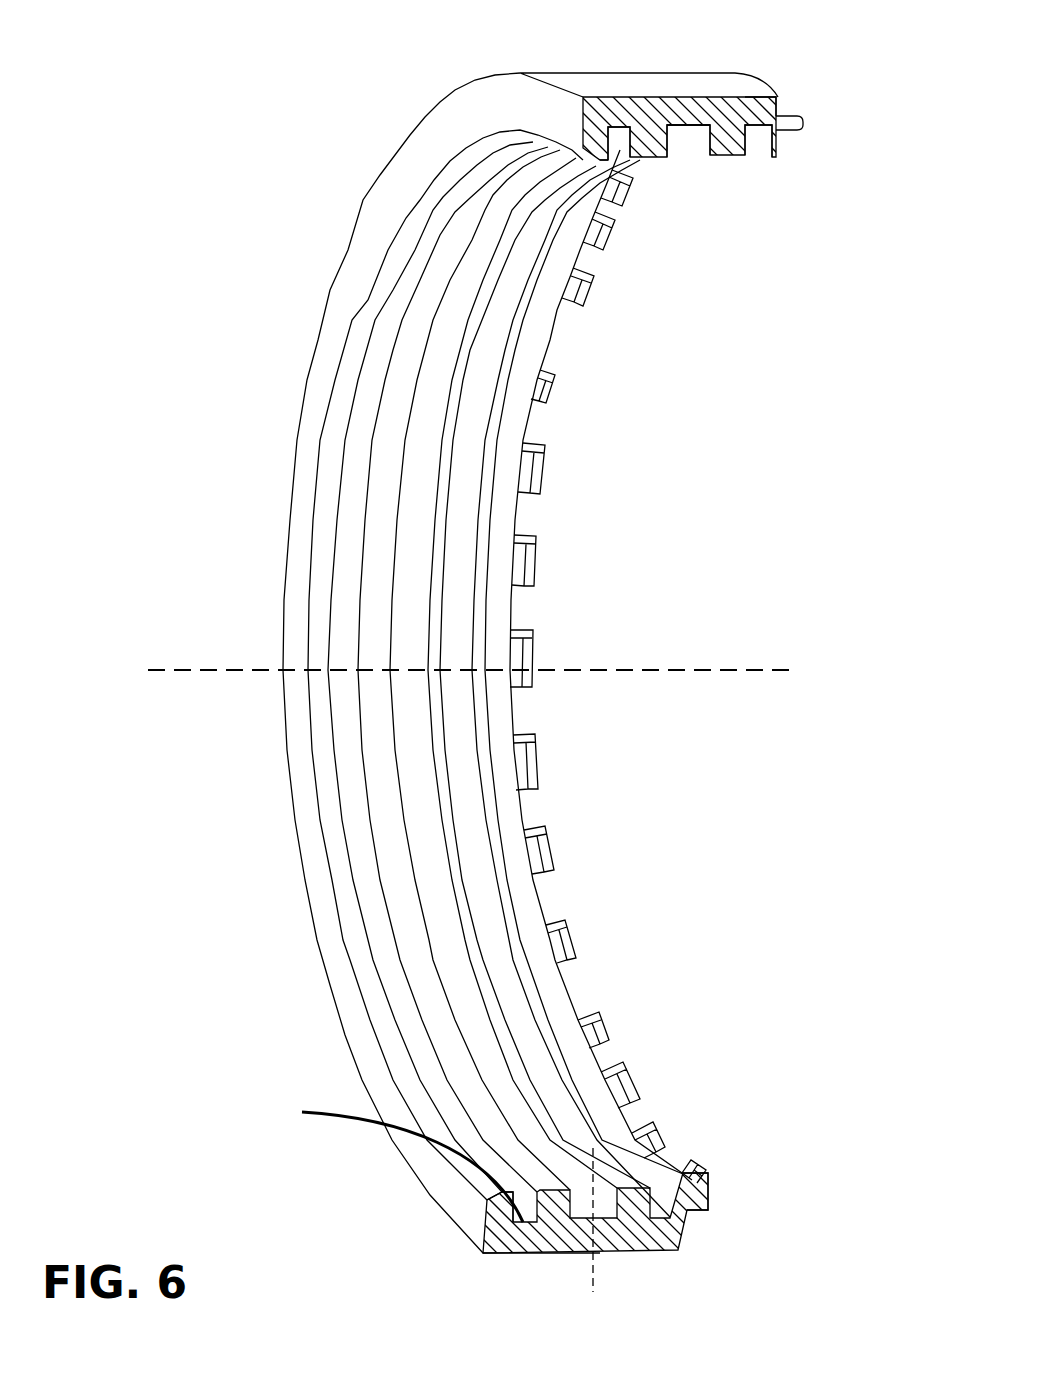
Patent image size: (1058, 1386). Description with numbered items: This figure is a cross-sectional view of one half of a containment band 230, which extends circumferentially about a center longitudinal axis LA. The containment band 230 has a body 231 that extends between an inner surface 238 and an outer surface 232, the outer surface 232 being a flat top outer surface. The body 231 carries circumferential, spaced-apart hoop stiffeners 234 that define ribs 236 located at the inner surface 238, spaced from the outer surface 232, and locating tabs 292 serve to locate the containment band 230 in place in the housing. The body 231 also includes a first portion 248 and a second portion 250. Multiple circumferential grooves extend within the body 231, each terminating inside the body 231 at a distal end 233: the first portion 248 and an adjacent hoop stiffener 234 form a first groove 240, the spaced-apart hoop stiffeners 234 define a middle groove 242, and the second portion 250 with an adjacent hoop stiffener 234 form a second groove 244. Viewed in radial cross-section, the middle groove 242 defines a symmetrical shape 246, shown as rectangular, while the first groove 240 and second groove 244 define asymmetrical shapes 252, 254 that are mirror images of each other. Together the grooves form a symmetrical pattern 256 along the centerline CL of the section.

The containment band 230 is at (247, 55).
The body 231 is at (776, 118).
The outer surface 232 is at (595, 83).
The distal end 233 is at (390, 1161).
The hoop stiffeners 234 is at (448, 578).
The ribs 236 is at (676, 1250).
The inner surface 238 is at (642, 1163).
The first groove 240 is at (619, 154).
The middle groove 242 is at (698, 146).
The second groove 244 is at (778, 100).
The symmetrical shape 246 is at (698, 143).
The first portion 248 is at (480, 1183).
The second portion 250 is at (706, 1212).
The asymmetrical shape 252 is at (764, 148).
The asymmetrical shape 254 is at (619, 155).
The symmetrical pattern 256 is at (532, 1246).
The locating tabs 292 is at (531, 557).
The center longitudinal axis LA is at (210, 665).
The centerline CL is at (600, 1282).